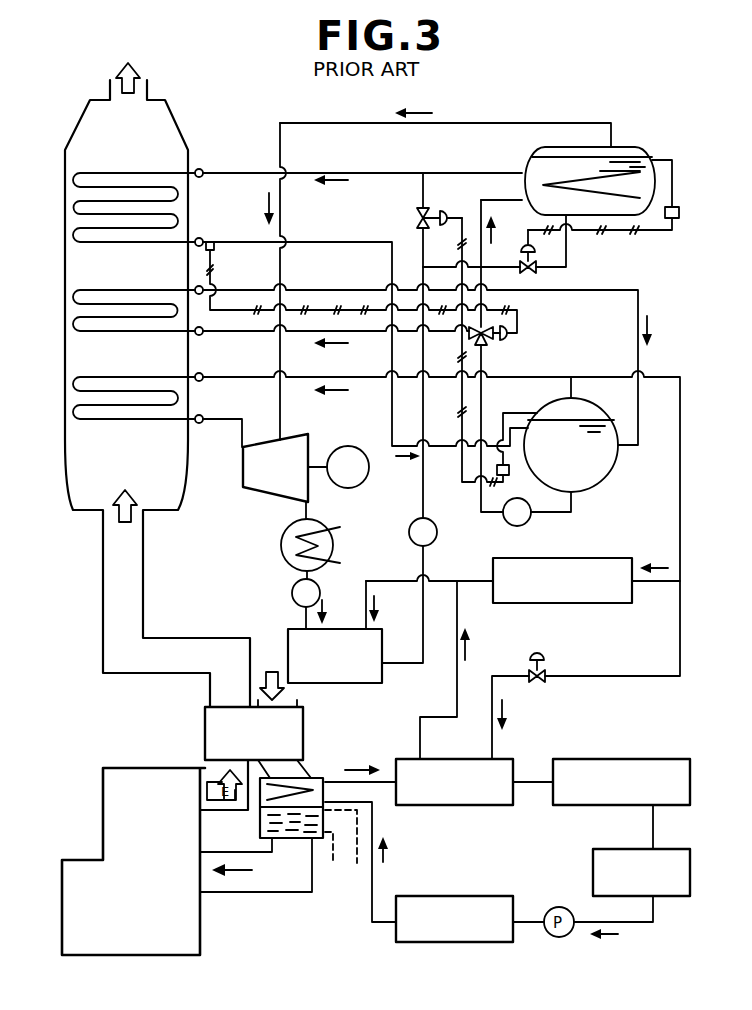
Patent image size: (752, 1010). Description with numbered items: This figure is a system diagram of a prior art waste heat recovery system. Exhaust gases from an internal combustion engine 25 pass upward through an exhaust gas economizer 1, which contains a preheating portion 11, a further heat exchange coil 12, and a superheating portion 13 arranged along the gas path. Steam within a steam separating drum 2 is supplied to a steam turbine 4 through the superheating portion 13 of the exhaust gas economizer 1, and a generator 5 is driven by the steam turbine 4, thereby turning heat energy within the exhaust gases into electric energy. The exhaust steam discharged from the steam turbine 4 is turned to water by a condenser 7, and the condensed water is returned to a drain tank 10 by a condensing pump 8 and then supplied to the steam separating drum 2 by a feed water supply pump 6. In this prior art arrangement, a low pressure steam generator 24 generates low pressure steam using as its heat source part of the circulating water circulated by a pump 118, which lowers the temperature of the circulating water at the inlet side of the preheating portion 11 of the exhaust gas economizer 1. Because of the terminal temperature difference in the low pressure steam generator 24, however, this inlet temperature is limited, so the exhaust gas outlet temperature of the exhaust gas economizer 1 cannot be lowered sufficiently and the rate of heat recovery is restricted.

The exhaust gas economizer 1 is at (160, 80).
The preheating portion 11 is at (78, 198).
The second heat exchange coil 12 is at (78, 313).
The superheating portion 13 is at (78, 399).
The low pressure steam generator 24 is at (620, 152).
The steam separating drum 2 is at (600, 477).
The pump 118 is at (528, 524).
The steam turbine 4 is at (262, 486).
The generator 5 is at (354, 446).
The condenser 7 is at (284, 544).
The condensing pump 8 is at (292, 594).
The drain tank 10 is at (343, 683).
The feed water supply pump 6 is at (437, 539).
The internal combustion engine 25 is at (83, 872).